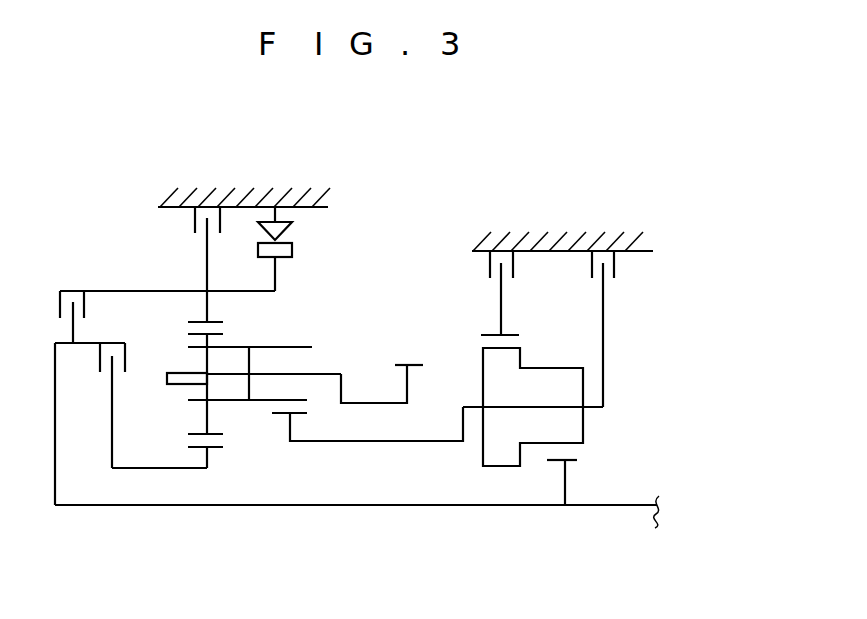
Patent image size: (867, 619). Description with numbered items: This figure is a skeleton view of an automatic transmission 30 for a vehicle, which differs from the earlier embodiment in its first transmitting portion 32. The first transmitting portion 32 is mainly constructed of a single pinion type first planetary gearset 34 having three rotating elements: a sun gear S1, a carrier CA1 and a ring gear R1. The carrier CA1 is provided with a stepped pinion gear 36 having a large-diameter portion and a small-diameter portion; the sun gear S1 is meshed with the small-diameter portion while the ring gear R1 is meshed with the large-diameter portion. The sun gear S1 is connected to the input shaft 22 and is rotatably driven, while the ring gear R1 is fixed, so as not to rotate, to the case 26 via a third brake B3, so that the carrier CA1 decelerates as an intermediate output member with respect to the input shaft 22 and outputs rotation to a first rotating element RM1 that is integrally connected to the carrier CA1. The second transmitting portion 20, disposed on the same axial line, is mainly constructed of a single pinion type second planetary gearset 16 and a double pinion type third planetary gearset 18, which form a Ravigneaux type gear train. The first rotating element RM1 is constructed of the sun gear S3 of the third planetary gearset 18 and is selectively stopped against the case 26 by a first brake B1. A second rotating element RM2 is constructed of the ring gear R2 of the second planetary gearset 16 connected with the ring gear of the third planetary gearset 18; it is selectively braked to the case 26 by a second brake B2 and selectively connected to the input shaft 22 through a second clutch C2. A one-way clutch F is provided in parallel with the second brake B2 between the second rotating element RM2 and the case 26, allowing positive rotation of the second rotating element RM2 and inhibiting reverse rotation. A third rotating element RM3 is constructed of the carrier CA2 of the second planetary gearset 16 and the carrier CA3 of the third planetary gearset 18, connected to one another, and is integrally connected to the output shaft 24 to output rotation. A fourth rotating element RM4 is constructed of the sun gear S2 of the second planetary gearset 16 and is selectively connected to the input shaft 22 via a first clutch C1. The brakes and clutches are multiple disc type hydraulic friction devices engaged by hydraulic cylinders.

The second planetary gearset 16 is at (205, 482).
The third planetary gearset 18 is at (350, 499).
The second transmitting portion 20 is at (360, 216).
The input shaft 22 is at (630, 513).
The output shaft 24 is at (397, 365).
The case 26 is at (250, 198).
The automatic transmission 30 is at (612, 160).
The first transmitting portion 32 is at (458, 241).
The first planetary gearset 34 is at (555, 528).
The stepped pinion gear 36 is at (532, 378).
The first brake B1 is at (628, 268).
The second brake B2 is at (179, 226).
The third brake B3 is at (473, 292).
The first clutch C1 is at (119, 387).
The second clutch C2 is at (71, 295).
The carrier CA1 is at (603, 368).
The carrier CA2 is at (182, 385).
The carrier CA3 is at (283, 375).
The one-way clutch F is at (288, 249).
The ring gear R1 is at (510, 332).
The ring gear R2 is at (215, 323).
The first rotating element RM1 is at (360, 443).
The second rotating element RM2 is at (182, 289).
The third rotating element RM3 is at (365, 403).
The fourth rotating element RM4 is at (167, 471).
The sun gear S1 is at (580, 486).
The sun gear S2 is at (213, 450).
The sun gear S3 is at (282, 413).